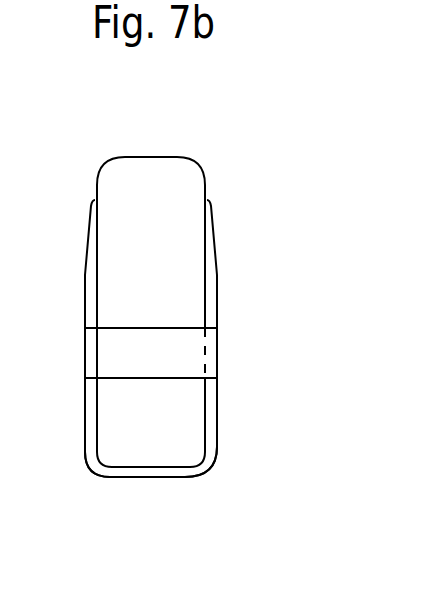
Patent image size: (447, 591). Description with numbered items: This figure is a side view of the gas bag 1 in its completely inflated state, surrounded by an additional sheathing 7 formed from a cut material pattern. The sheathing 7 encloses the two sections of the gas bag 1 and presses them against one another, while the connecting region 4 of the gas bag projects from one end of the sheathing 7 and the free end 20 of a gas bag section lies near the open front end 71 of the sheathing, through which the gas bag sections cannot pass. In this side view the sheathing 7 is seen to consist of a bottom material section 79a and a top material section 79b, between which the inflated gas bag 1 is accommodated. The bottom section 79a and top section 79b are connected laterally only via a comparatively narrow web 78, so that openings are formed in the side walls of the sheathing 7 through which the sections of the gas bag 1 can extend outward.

The gas bag 1 is at (215, 117).
The connecting region 4 is at (148, 157).
The sheathing 7 is at (214, 219).
The web 78 is at (208, 343).
The bottom material section 79a is at (85, 440).
The top material section 79b is at (217, 428).
The free end 20 is at (120, 458).
The front end 71 is at (160, 478).